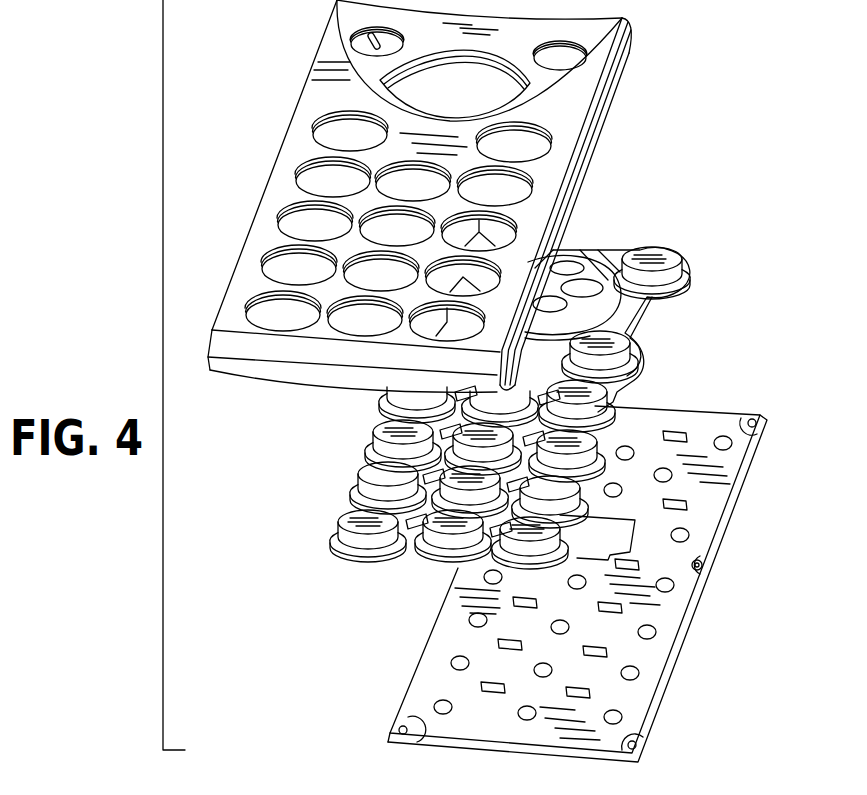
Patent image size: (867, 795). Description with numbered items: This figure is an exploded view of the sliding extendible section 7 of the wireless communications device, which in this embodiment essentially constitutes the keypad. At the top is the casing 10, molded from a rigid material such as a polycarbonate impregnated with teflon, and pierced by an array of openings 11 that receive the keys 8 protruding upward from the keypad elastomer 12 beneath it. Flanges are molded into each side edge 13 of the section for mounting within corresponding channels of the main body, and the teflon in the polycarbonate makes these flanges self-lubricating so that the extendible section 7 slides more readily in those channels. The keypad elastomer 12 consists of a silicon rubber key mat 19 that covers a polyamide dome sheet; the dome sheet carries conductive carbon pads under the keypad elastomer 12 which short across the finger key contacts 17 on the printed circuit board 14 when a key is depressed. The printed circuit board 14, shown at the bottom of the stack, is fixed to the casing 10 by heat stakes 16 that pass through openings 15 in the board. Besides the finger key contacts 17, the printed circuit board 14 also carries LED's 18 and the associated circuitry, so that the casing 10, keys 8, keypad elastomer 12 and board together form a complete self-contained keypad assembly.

The extendible section 7 is at (673, 112).
The keys 8 is at (657, 258).
The casing 10 is at (325, 86).
The openings 11 is at (283, 270).
The keypad elastomer 12 is at (647, 372).
The side edge 13 is at (487, 88).
The printed circuit board 14 is at (648, 655).
The openings 15 is at (703, 566).
The heat stakes 16 is at (372, 42).
The finger key contacts 17 is at (728, 443).
The LED's 18 is at (492, 688).
The key mat 19 is at (418, 560).